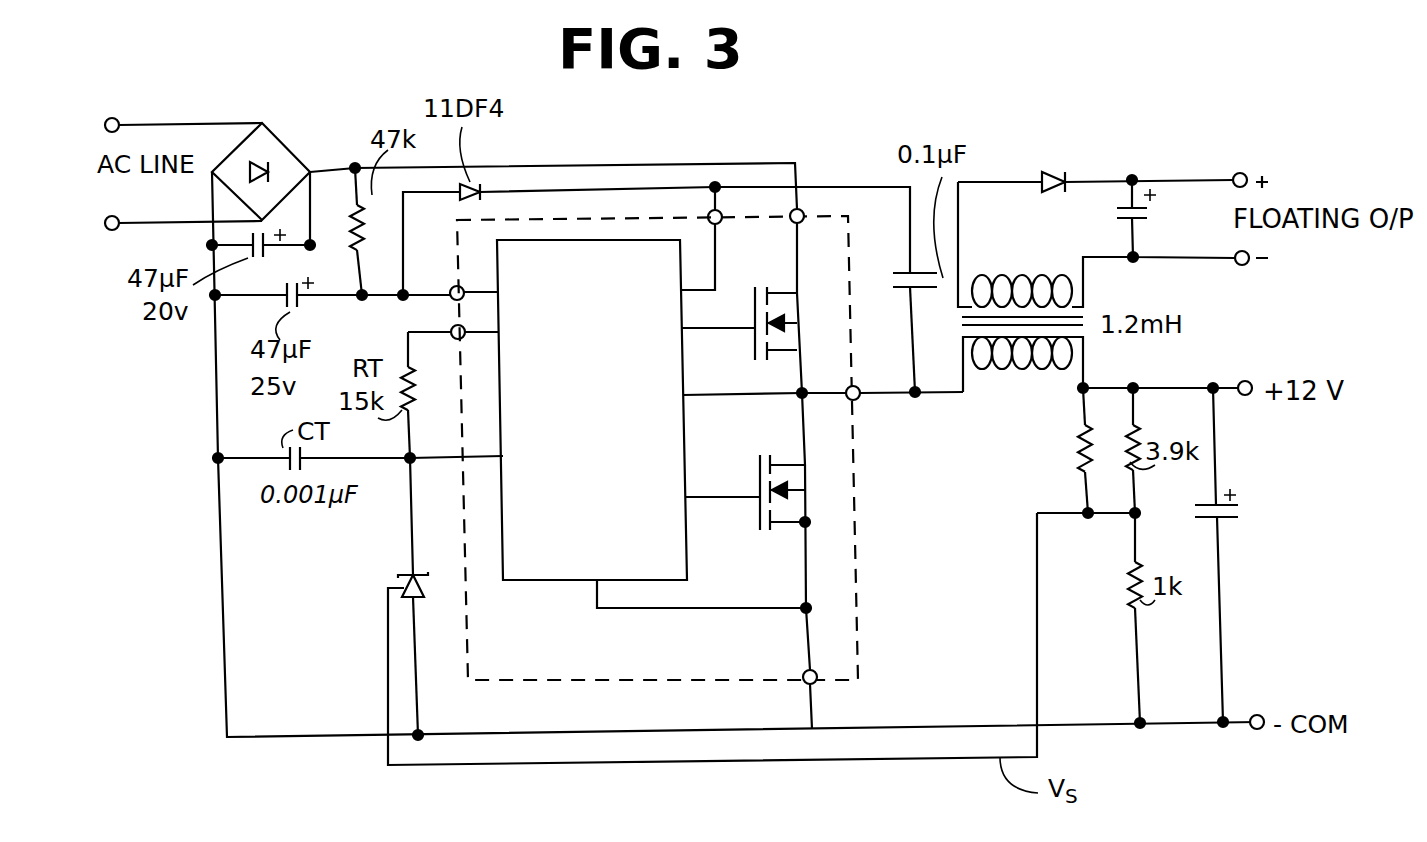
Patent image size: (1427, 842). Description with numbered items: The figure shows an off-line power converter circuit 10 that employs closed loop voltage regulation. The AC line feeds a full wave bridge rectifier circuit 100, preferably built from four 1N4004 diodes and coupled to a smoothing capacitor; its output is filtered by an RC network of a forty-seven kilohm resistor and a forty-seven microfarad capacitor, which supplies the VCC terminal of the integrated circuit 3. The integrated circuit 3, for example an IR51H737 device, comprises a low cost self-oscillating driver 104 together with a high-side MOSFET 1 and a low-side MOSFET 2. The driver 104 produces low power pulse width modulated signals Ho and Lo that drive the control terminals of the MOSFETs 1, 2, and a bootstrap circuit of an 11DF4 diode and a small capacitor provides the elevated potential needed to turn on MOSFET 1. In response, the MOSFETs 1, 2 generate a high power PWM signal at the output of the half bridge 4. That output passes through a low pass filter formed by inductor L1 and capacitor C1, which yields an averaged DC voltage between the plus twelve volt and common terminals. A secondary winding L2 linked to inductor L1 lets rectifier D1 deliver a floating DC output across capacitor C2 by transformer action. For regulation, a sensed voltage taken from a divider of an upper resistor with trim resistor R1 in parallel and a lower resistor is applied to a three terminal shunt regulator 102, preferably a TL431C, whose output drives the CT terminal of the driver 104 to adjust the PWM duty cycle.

The full wave bridge rectifier circuit 100 is at (318, 100).
The self-oscillating driver 104 is at (550, 230).
The off-line power converter circuit 10 is at (627, 152).
The high-side MOSFET 1 is at (808, 290).
The low-side MOSFET 2 is at (812, 490).
The integrated circuit 3 is at (515, 690).
The half bridge output 4 is at (868, 405).
The three terminal shunt regulator 102 is at (360, 599).
The rectifier D1 is at (1072, 168).
The inductor L1 is at (1018, 373).
The secondary winding L2 is at (1028, 256).
The capacitor C1 is at (1247, 508).
The capacitor C2 is at (1140, 228).
The trim resistor R1 is at (1078, 450).